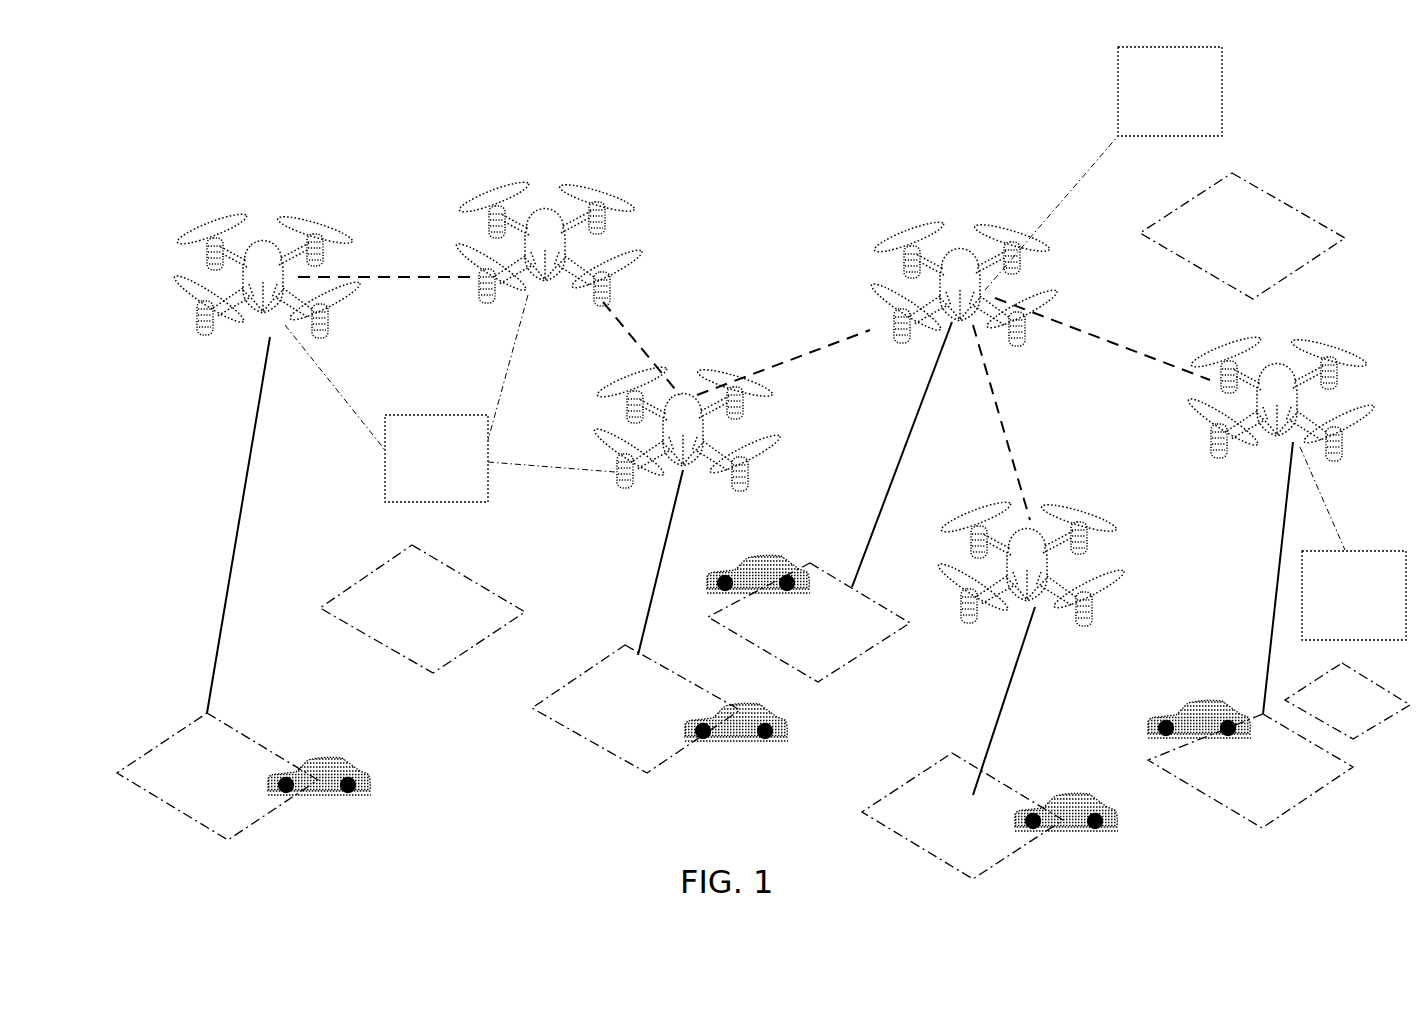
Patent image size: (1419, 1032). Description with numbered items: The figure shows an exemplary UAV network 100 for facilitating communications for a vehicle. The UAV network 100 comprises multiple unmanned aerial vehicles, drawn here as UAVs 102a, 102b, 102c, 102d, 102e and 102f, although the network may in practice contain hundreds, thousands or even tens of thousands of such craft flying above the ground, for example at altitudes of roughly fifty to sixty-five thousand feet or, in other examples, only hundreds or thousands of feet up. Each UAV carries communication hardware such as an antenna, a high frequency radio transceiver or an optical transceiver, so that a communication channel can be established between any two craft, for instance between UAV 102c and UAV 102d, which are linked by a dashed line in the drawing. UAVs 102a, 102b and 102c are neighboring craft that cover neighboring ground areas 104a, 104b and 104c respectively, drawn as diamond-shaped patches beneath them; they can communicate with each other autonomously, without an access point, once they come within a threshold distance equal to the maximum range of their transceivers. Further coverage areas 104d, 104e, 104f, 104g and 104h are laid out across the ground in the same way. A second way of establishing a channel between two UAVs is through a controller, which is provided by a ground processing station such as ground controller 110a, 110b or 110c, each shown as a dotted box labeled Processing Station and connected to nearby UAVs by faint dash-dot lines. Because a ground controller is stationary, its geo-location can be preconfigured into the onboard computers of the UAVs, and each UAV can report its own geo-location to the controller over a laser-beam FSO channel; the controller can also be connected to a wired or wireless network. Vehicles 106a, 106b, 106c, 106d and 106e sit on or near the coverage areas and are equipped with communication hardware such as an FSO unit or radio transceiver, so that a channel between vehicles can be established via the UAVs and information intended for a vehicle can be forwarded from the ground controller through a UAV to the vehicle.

The UAV network 100 is at (1151, 826).
The UAV 102a is at (260, 240).
The UAV 102b is at (638, 260).
The UAV 102c is at (775, 438).
The UAV 102d is at (1025, 243).
The UAV 102e is at (1095, 523).
The UAV 102f is at (1352, 358).
The area 104a is at (217, 776).
The area 104b is at (422, 609).
The area 104c is at (636, 709).
The area 104d is at (809, 622).
The area 104e is at (962, 816).
The area 104f is at (1250, 771).
The area 104g is at (1347, 701).
The area 104h is at (1242, 236).
The vehicle 106a is at (356, 757).
The vehicle 106b is at (788, 735).
The vehicle 106c is at (768, 556).
The vehicle 106d is at (1055, 806).
The vehicle 106e is at (1183, 707).
The ground controller 110a is at (437, 415).
The ground controller 110b is at (1350, 551).
The ground controller 110c is at (1222, 92).